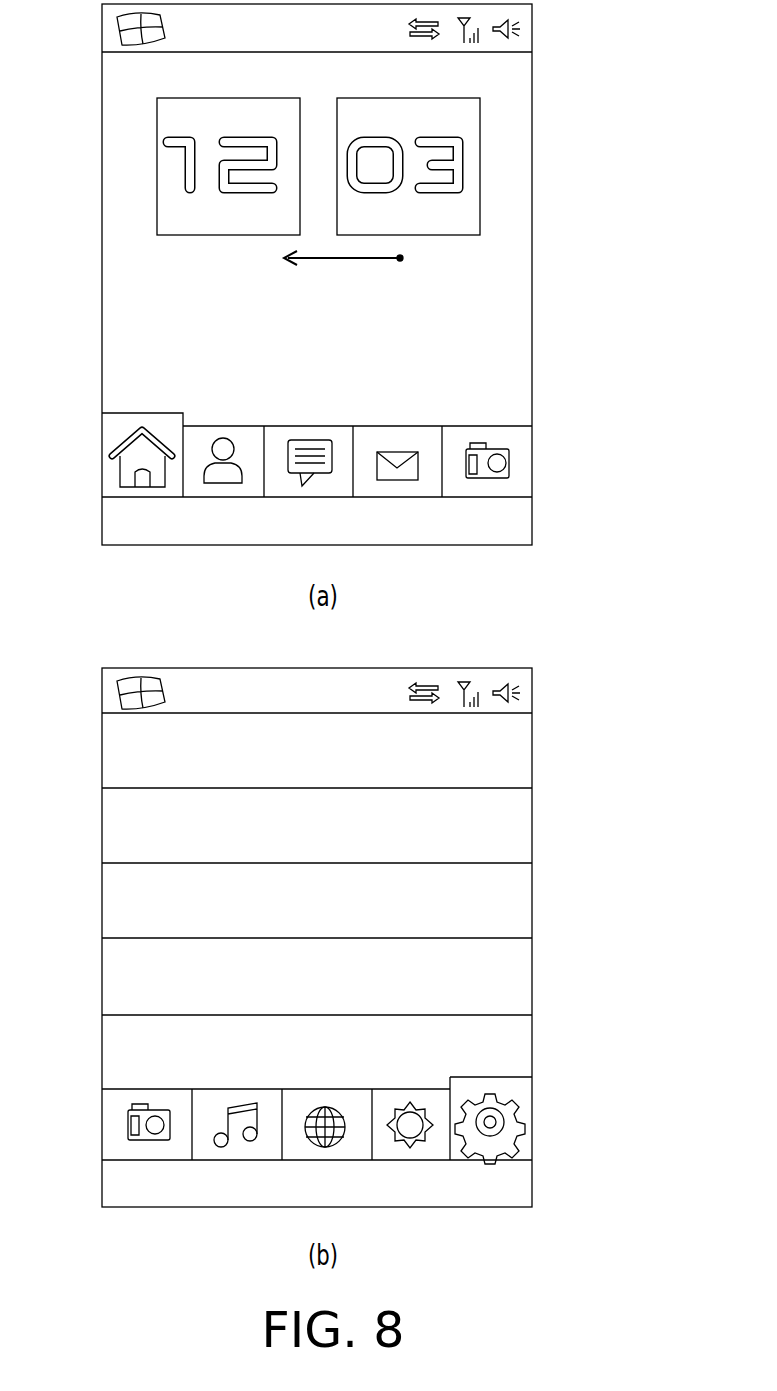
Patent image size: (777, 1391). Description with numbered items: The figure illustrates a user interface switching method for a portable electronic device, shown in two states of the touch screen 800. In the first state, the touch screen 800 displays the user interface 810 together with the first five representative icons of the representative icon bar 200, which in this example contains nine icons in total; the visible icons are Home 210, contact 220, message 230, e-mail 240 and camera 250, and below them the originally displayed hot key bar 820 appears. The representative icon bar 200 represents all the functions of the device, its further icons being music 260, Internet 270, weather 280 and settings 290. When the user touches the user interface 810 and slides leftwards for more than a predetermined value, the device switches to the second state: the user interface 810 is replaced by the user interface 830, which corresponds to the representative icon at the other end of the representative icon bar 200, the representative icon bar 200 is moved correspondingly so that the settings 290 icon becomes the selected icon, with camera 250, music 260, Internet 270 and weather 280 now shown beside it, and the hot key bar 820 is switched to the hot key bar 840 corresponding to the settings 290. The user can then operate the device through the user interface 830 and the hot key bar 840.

The touch screen 800 is at (532, 162).
The user interface 810 is at (512, 228).
The representative icon bar 200 is at (346, 741).
The hot key bar 820 is at (525, 535).
The user interface 830 is at (510, 890).
The hot key bar 840 is at (525, 1195).
The Home 210 is at (145, 412).
The contact 220 is at (235, 425).
The message 230 is at (323, 425).
The e-mail 240 is at (427, 425).
The camera 250 is at (502, 425).
The music 260 is at (237, 1089).
The Internet 270 is at (353, 1089).
The weather 280 is at (410, 1089).
The settings 290 is at (488, 1077).